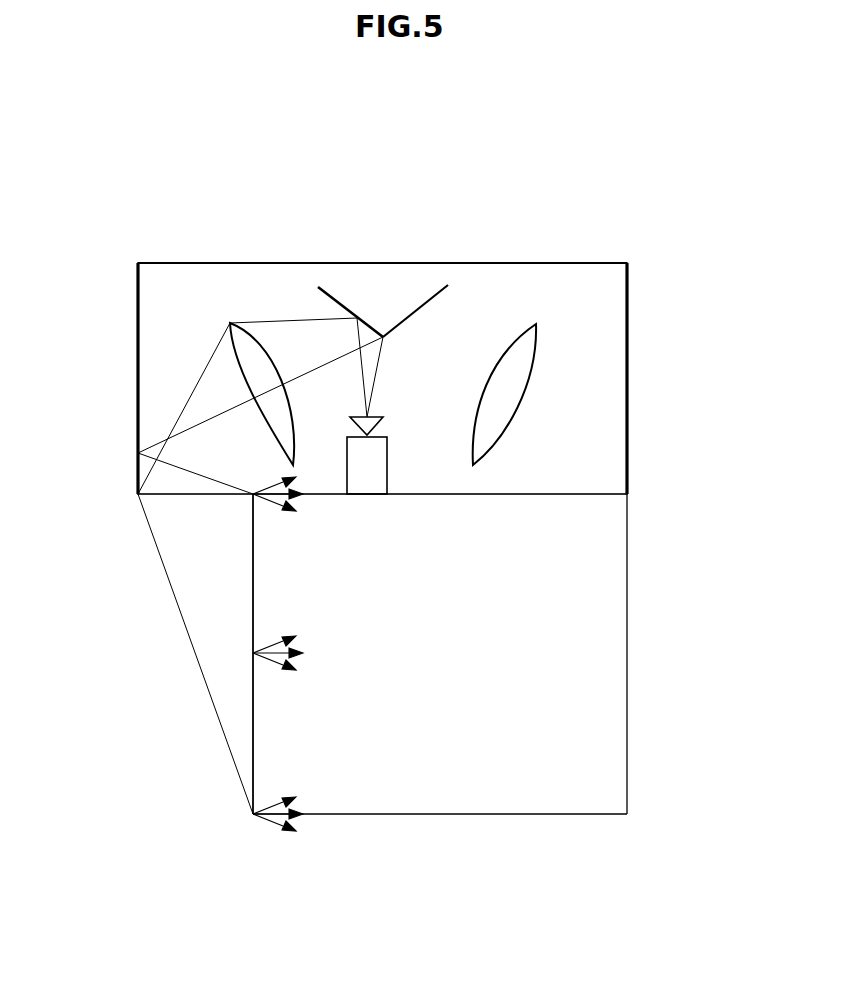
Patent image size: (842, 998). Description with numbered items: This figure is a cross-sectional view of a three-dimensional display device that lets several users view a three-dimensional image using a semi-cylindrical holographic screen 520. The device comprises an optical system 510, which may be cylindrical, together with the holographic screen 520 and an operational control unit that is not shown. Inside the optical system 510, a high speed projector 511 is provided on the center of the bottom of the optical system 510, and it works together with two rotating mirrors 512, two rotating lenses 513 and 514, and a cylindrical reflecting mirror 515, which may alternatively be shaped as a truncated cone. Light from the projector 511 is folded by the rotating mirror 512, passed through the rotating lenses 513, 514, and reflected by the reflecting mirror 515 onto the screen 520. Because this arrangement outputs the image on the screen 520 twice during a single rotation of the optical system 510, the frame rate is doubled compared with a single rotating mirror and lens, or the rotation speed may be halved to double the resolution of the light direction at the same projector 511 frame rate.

The optical system 510 is at (245, 262).
The high speed projector 511 is at (387, 465).
The rotating mirror 512 is at (433, 300).
The rotating lens 513 is at (232, 358).
The rotating lens 514 is at (536, 360).
The cylindrical reflecting mirror 515 is at (137, 468).
The holographic screen 520 is at (627, 653).